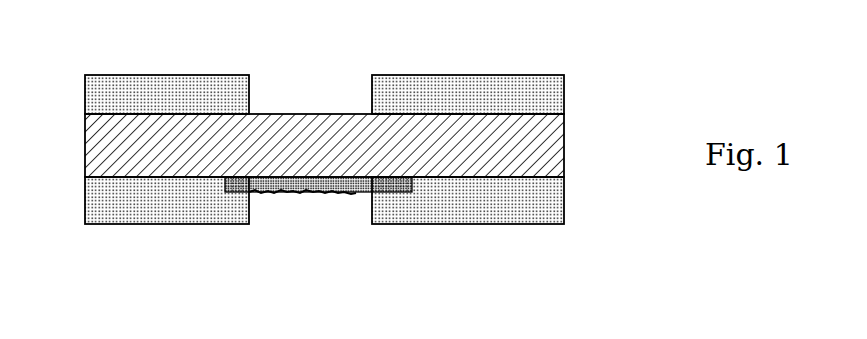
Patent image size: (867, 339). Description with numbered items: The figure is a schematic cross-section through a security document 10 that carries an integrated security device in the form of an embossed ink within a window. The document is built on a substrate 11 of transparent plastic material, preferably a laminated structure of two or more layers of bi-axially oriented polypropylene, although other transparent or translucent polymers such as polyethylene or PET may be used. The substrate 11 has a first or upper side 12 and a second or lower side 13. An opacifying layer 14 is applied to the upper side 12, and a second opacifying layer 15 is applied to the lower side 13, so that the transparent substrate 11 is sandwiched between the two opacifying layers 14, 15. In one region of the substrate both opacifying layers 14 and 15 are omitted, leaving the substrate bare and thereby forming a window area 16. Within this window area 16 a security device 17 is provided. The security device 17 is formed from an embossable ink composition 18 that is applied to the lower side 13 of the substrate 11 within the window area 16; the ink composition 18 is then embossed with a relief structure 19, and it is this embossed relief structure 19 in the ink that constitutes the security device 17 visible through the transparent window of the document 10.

The security document 10 is at (597, 72).
The substrate 11 is at (548, 150).
The first or upper side 12 is at (475, 115).
The second or lower side 13 is at (483, 180).
The opacifying layer 14 is at (175, 86).
The opacifying layer 15 is at (158, 210).
The window area 16 is at (300, 83).
The security device 17 is at (356, 204).
The embossable ink composition 18 is at (237, 192).
The relief structure 19 is at (300, 192).